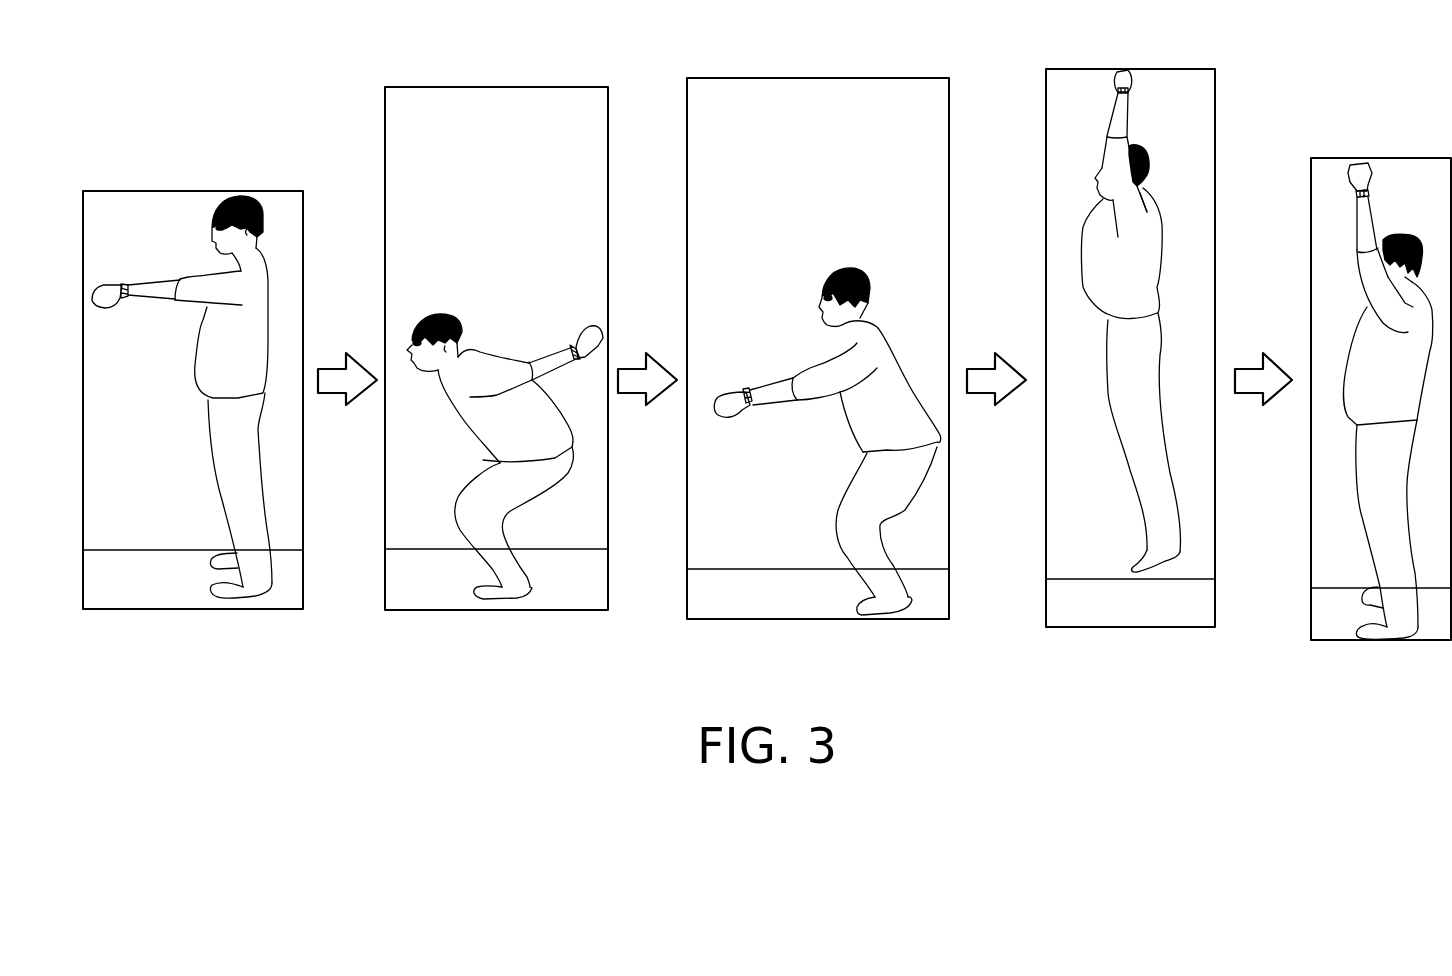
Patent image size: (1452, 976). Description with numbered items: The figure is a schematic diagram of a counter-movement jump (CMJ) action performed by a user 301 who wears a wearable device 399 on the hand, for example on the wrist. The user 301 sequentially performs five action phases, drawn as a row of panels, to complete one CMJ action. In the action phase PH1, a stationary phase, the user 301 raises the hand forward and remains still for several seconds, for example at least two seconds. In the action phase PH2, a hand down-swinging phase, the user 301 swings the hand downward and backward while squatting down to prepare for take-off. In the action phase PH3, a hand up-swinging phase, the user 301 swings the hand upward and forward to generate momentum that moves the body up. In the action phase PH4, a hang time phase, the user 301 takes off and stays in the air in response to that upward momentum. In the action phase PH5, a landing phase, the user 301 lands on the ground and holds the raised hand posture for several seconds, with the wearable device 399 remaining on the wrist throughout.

The wearable device 399 is at (124, 282).
The user 301 is at (245, 197).
The action phase PH1 is at (193, 392).
The action phase PH2 is at (496, 379).
The action phase PH3 is at (818, 379).
The action phase PH4 is at (1130, 378).
The action phase PH5 is at (1381, 430).